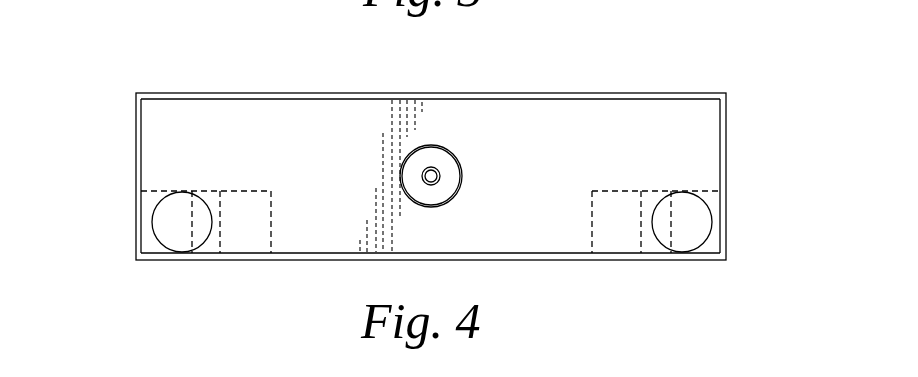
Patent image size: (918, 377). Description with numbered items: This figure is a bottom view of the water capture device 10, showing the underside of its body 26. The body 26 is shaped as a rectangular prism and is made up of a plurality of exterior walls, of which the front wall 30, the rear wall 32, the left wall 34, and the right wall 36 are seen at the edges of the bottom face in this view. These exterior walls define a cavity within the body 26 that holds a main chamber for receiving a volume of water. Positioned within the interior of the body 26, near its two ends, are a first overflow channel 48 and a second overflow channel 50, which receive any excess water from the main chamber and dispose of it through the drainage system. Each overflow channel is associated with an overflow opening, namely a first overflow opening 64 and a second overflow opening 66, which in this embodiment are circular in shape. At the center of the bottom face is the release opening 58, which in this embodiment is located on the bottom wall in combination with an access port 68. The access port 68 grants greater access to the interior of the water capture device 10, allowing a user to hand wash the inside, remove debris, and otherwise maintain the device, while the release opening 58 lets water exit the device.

The water capture device 10 is at (80, 52).
The body 26 is at (604, 74).
The front wall 30 is at (247, 93).
The rear wall 32 is at (303, 261).
The left wall 34 is at (136, 173).
The right wall 36 is at (728, 135).
The first overflow channel 48 is at (246, 249).
The second overflow channel 50 is at (617, 241).
The release opening 58 is at (439, 167).
The first overflow opening 64 is at (172, 245).
The second overflow opening 66 is at (686, 241).
The access port 68 is at (432, 207).